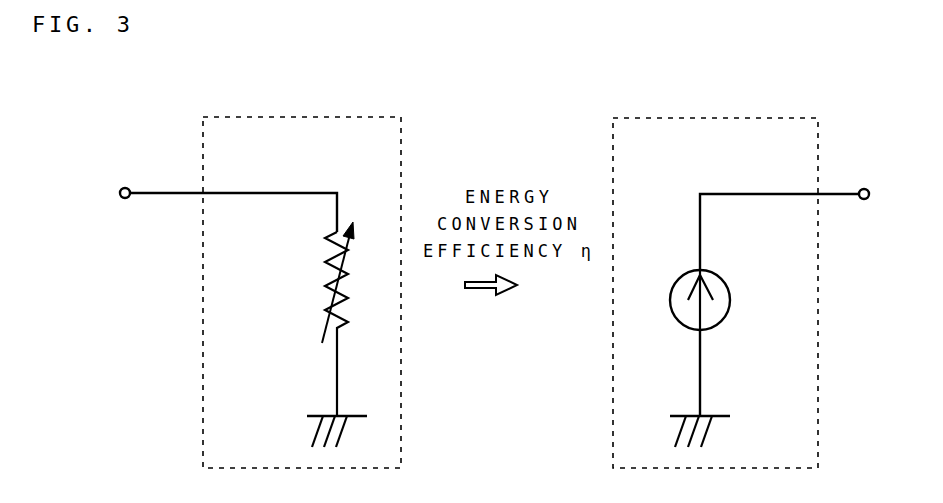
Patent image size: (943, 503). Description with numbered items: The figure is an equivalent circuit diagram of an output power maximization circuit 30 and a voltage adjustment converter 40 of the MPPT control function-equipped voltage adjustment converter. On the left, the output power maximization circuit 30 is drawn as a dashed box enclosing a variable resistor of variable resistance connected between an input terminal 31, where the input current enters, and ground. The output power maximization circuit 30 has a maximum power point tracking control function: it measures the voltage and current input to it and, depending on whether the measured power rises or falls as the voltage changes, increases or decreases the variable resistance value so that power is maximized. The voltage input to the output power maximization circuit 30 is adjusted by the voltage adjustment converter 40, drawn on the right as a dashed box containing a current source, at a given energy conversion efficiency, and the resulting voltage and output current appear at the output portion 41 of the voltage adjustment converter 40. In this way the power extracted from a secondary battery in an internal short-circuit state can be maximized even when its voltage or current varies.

The output power maximization circuit 30 is at (265, 273).
The input terminal 31 is at (127, 175).
The voltage adjustment converter 40 is at (736, 273).
The output portion 41 is at (866, 176).